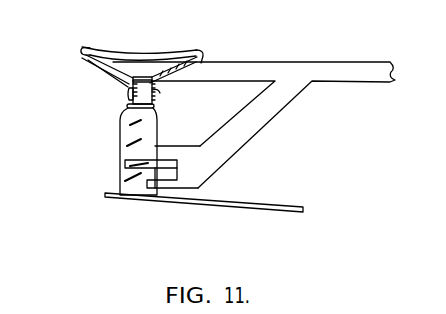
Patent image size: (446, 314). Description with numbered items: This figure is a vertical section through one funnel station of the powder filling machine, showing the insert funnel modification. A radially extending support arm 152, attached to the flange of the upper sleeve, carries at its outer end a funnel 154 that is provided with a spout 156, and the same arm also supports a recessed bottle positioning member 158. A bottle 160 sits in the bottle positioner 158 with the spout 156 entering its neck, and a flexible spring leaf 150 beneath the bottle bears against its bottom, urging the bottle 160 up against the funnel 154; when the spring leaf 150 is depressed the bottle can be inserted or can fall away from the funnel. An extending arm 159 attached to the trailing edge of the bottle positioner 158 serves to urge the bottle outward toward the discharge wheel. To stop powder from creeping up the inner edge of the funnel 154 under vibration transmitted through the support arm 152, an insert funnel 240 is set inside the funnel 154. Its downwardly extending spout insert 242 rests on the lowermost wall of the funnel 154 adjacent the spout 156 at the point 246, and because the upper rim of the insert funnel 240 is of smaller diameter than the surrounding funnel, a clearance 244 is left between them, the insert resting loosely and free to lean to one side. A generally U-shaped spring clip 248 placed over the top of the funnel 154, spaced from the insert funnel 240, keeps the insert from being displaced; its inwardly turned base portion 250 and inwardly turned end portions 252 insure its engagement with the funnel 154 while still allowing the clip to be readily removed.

The spring leaf member 150 is at (217, 201).
The support arm 152 is at (360, 71).
The funnel 154 is at (110, 68).
The spout 156 is at (153, 88).
The bottle positioning member 158 is at (168, 155).
The extending arm 159 is at (124, 163).
The bottle 160 is at (121, 137).
The insert funnel 240 is at (133, 70).
The spout insert 242 is at (123, 87).
The clearance 244 is at (114, 52).
The resting point of spout insert 246 is at (130, 101).
The spring clip 248 is at (163, 53).
The inwardly turned base portion 250 is at (80, 49).
The inwardly turned end portion 252 is at (203, 55).